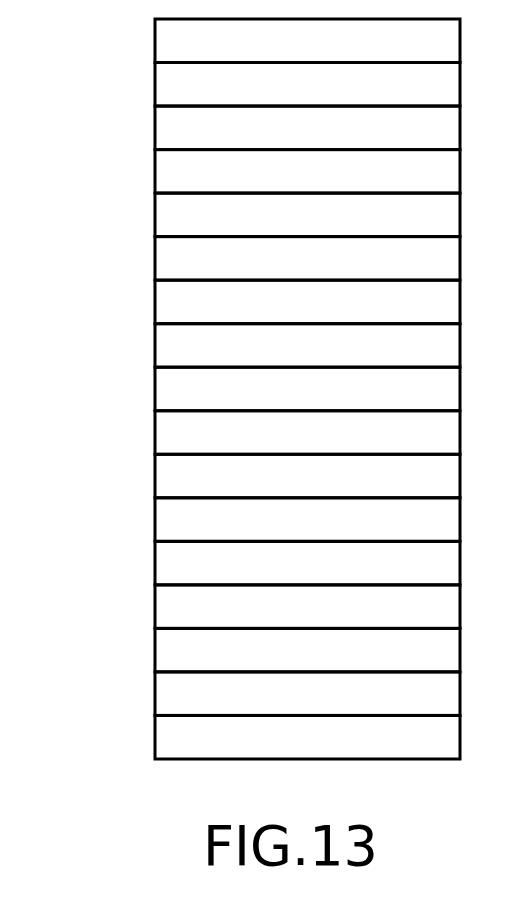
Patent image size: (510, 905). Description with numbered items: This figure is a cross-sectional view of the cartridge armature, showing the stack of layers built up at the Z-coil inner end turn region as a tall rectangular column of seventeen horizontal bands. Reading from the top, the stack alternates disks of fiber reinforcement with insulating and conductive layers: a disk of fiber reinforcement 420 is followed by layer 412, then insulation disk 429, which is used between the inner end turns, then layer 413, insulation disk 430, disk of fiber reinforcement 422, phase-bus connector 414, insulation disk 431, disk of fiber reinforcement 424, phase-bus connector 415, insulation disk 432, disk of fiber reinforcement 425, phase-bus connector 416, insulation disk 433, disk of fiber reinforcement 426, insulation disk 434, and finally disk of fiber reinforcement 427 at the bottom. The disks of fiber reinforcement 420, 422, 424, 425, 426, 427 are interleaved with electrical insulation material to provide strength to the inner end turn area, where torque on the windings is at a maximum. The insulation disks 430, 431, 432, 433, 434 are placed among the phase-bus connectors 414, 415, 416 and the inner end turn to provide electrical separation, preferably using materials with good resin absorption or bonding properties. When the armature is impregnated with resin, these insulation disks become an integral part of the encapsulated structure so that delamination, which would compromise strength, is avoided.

The disk of fiber reinforcement 420 is at (165, 40).
The layer 412 is at (165, 84).
The insulation disk 429 is at (165, 127).
The layer 413 is at (165, 171).
The insulation disk 430 is at (165, 214).
The disk of fiber reinforcement 422 is at (165, 258).
The phase-bus connector 414 is at (165, 301).
The insulation disk 431 is at (165, 345).
The disk of fiber reinforcement 424 is at (165, 388).
The phase-bus connector 415 is at (165, 432).
The insulation disk 432 is at (165, 475).
The disk of fiber reinforcement 425 is at (165, 519).
The phase-bus connector 416 is at (165, 562).
The insulation disk 433 is at (165, 606).
The disk of fiber reinforcement 426 is at (165, 649).
The insulation disk 434 is at (165, 693).
The disk of fiber reinforcement 427 is at (165, 736).